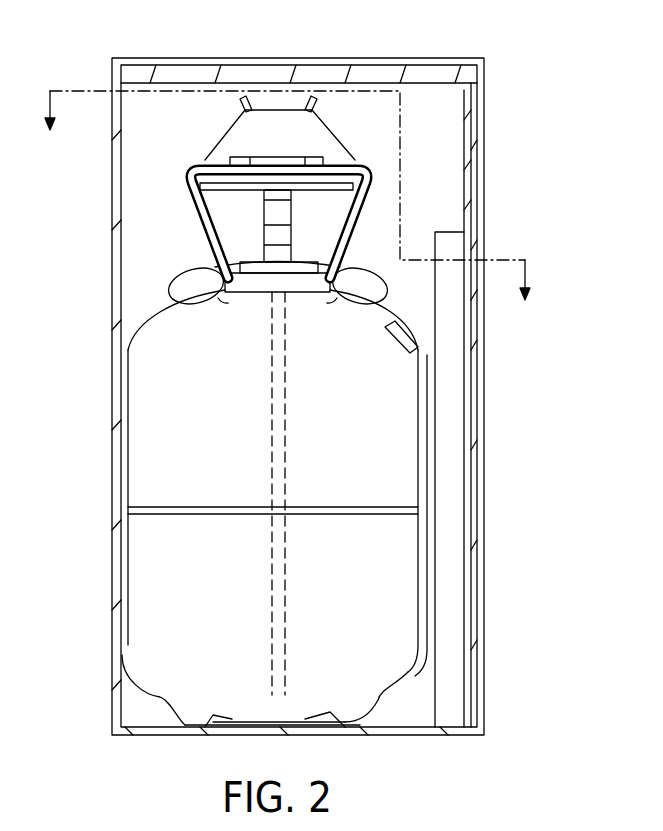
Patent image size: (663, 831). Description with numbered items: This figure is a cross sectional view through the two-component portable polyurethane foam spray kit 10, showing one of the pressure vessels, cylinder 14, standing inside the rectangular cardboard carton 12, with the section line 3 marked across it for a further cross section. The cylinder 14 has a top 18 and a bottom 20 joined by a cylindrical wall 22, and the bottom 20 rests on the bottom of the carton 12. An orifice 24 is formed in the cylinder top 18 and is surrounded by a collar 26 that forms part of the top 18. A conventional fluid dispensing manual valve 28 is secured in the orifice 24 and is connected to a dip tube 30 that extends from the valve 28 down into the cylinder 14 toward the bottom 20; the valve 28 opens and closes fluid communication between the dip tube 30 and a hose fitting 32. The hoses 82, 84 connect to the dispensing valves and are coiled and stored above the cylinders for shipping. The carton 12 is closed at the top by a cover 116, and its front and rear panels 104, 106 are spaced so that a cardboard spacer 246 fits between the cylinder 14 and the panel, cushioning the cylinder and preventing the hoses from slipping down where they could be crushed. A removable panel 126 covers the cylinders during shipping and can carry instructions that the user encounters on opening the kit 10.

The two-component portable polyurethane foam spray kit 10 is at (548, 72).
The carton 12 is at (113, 712).
The cylinder 14 is at (152, 318).
The cylinder top 18 is at (410, 322).
The cylinder bottom 20 is at (235, 725).
The cylindrical wall 22 is at (470, 572).
The orifice 24 is at (292, 295).
The collar 26 is at (255, 292).
The fluid dispensing manual valve 28 is at (262, 157).
The dip tube 30 is at (287, 435).
The hose fitting 32 is at (296, 232).
The hose 82 is at (214, 252).
The hose 84 is at (183, 275).
The front panel 104 is at (484, 642).
The rear panel 106 is at (113, 640).
The cover 116 is at (405, 63).
The removable panel 126 is at (208, 85).
The spacer 246 is at (452, 440).
The section line 3- 3 is at (291, 195).